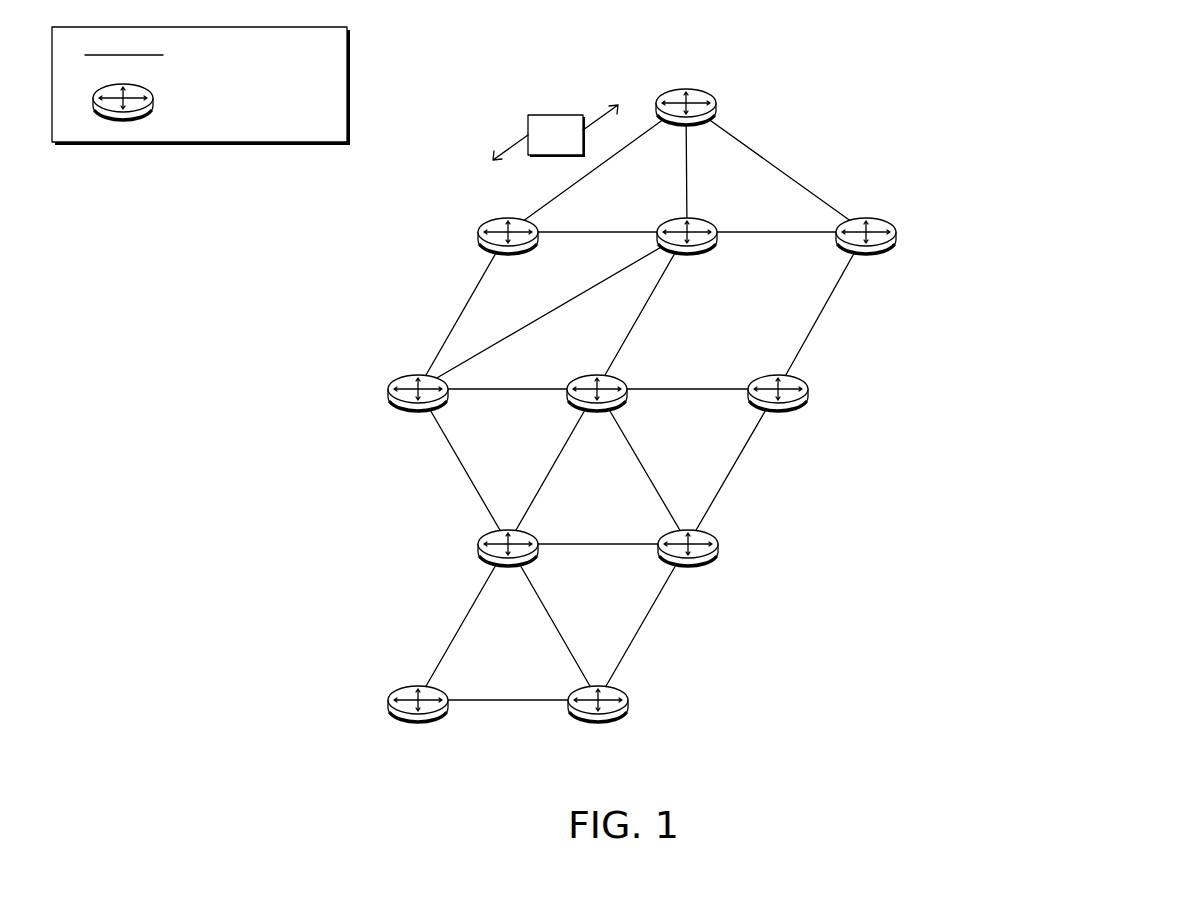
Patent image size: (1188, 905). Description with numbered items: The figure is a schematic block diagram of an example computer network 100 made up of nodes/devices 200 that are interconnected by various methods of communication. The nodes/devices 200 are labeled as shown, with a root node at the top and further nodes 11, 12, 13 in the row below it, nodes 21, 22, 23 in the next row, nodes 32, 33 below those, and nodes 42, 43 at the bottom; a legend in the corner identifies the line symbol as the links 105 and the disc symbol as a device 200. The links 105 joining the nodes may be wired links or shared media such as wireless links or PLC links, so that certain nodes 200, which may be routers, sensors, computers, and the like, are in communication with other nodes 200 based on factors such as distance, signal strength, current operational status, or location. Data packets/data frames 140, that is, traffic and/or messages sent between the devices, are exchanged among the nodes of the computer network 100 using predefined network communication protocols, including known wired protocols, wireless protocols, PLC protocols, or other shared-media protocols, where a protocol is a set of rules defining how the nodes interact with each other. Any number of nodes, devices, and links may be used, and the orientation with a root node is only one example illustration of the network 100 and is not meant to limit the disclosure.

The computer network 100 is at (1101, 82).
The links 105 is at (475, 372).
The nodes/devices 200 is at (494, 405).
The data packets/data frames 140 is at (571, 146).
The node 11 is at (508, 254).
The node 12 is at (687, 254).
The node 13 is at (866, 255).
The node 21 is at (418, 411).
The node 22 is at (597, 411).
The node 23 is at (778, 411).
The node 32 is at (508, 566).
The node 33 is at (688, 566).
The node 42 is at (418, 723).
The node 43 is at (598, 723).